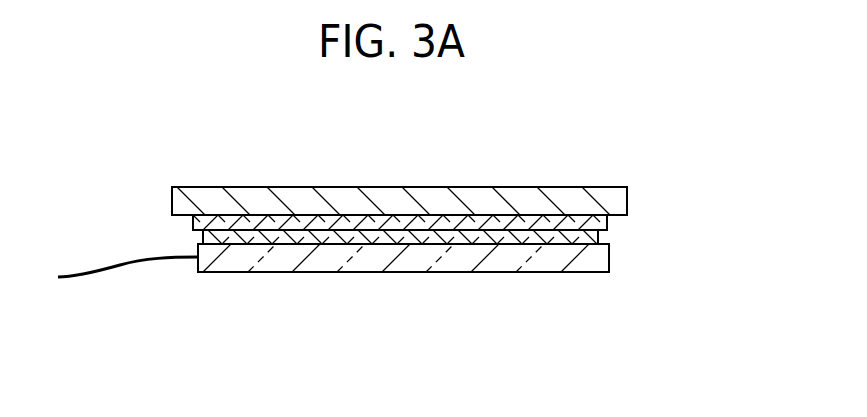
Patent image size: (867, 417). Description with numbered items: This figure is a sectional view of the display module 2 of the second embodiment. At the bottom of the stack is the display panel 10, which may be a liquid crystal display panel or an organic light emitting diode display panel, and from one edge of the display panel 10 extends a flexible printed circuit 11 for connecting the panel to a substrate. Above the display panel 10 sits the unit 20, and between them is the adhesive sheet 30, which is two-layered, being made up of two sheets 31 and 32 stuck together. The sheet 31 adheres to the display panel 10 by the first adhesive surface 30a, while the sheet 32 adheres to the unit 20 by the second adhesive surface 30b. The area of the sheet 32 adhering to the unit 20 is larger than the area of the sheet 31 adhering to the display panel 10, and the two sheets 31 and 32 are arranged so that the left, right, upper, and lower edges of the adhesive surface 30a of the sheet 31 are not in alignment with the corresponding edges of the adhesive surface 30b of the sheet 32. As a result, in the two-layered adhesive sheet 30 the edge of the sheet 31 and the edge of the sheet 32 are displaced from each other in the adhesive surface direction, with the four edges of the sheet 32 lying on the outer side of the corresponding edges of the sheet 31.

The display module 2 is at (260, 111).
The display panel 10 is at (577, 265).
The flexible printed circuit 11 is at (118, 264).
The unit 20 is at (563, 195).
The adhesive sheet 30 is at (695, 198).
The sheet 31 is at (585, 237).
The sheet 32 is at (597, 222).
The first adhesive surface 30a is at (443, 244).
The second adhesive surface 30b is at (304, 214).